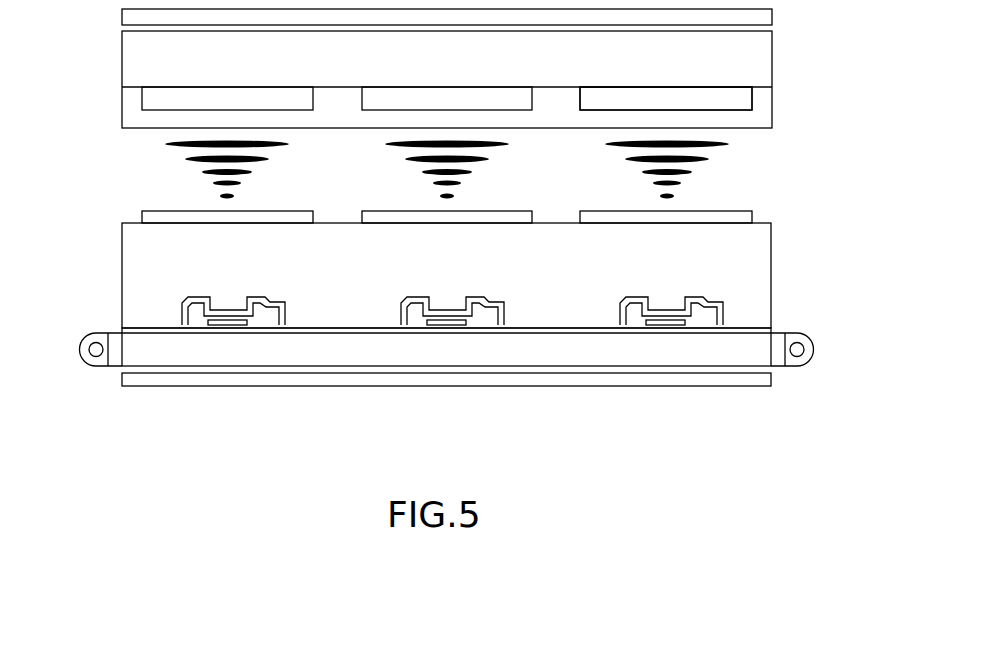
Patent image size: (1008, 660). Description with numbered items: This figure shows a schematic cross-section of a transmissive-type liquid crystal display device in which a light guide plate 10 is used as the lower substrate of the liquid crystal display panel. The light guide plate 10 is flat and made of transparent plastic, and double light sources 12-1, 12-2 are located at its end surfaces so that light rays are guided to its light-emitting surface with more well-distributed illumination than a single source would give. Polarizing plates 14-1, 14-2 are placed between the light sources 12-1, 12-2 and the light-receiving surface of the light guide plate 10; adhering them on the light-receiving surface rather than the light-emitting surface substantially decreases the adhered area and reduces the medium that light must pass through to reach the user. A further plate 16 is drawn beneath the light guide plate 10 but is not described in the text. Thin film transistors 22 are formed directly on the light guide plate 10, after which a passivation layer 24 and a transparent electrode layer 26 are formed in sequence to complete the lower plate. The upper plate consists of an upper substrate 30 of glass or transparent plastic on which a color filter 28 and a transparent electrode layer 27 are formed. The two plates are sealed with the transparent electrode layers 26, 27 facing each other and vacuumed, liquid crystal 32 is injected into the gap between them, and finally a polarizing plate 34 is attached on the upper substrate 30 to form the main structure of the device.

The light guide plate 10 is at (725, 347).
The light source 12-1 is at (95, 341).
The light source 12-2 is at (803, 349).
The polarizing plate 14-1 is at (117, 355).
The polarizing plate 14-2 is at (779, 353).
The bottom plate 16 is at (670, 380).
The thin film transistors 22 is at (712, 303).
The passivation layer 24 is at (740, 258).
The transparent electrode layer 26 is at (720, 217).
The transparent electrode layer 27 is at (762, 112).
The color filter 28 is at (693, 98).
The upper substrate 30 is at (747, 65).
The liquid crystal 32 is at (177, 168).
The polarizing plate 34 is at (755, 20).